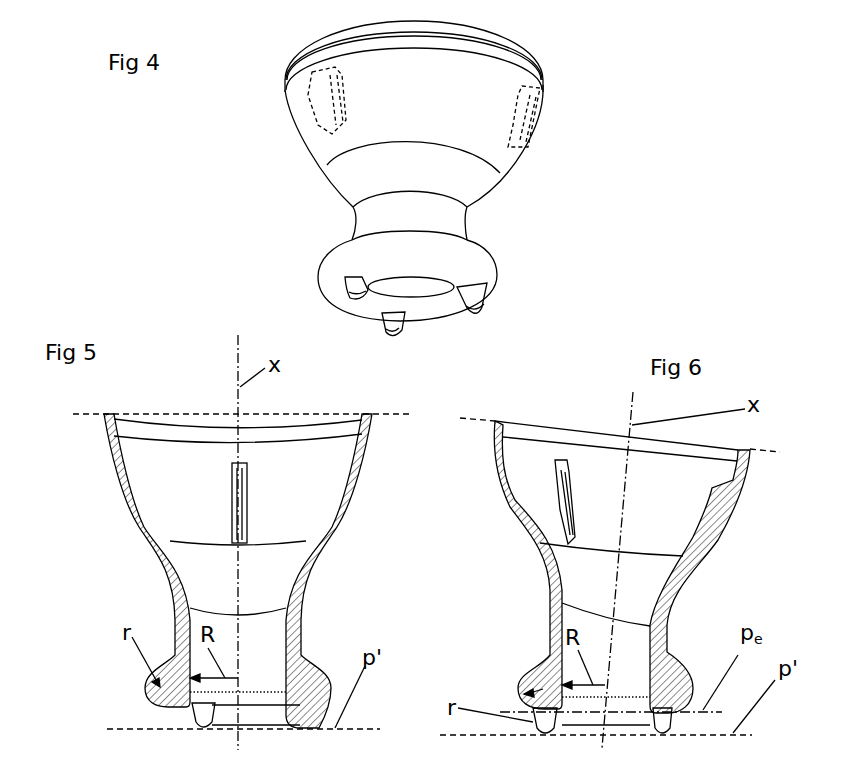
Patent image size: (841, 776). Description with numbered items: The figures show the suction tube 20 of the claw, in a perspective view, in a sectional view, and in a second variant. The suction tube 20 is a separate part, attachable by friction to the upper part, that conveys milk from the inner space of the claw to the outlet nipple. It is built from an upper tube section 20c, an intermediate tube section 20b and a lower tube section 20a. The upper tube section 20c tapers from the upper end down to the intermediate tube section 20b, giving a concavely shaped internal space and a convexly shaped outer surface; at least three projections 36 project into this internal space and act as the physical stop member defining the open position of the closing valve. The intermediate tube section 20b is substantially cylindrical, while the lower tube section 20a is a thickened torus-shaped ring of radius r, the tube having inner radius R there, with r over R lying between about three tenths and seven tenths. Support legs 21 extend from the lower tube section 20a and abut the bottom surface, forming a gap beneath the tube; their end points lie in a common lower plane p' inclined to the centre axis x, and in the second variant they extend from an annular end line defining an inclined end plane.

In FIG. 4, the suction tube 20 is at (257, 155).
In FIG. 5, the suction tube 20 is at (164, 398).
In FIG. 6, the suction tube 20 is at (555, 404).
In FIG. 4, the lower tube section 20a is at (495, 268).
In FIG. 5, the lower tube section 20a is at (150, 693).
In FIG. 6, the lower tube section 20a is at (540, 681).
In FIG. 4, the intermediate tube section 20b is at (465, 220).
In FIG. 5, the intermediate tube section 20b is at (180, 610).
In FIG. 6, the intermediate tube section 20b is at (552, 618).
In FIG. 4, the upper tube section 20c is at (490, 92).
In FIG. 5, the upper tube section 20c is at (108, 465).
In FIG. 6, the upper tube section 20c is at (500, 495).
In FIG. 4, the support leg 21 is at (470, 310).
In FIG. 5, the support leg 21 is at (200, 718).
In FIG. 6, the support leg 21 is at (655, 722).
In FIG. 4, the projection 36 is at (322, 96).
In FIG. 5, the projection 36 is at (232, 500).
In FIG. 6, the projection 36 is at (577, 496).